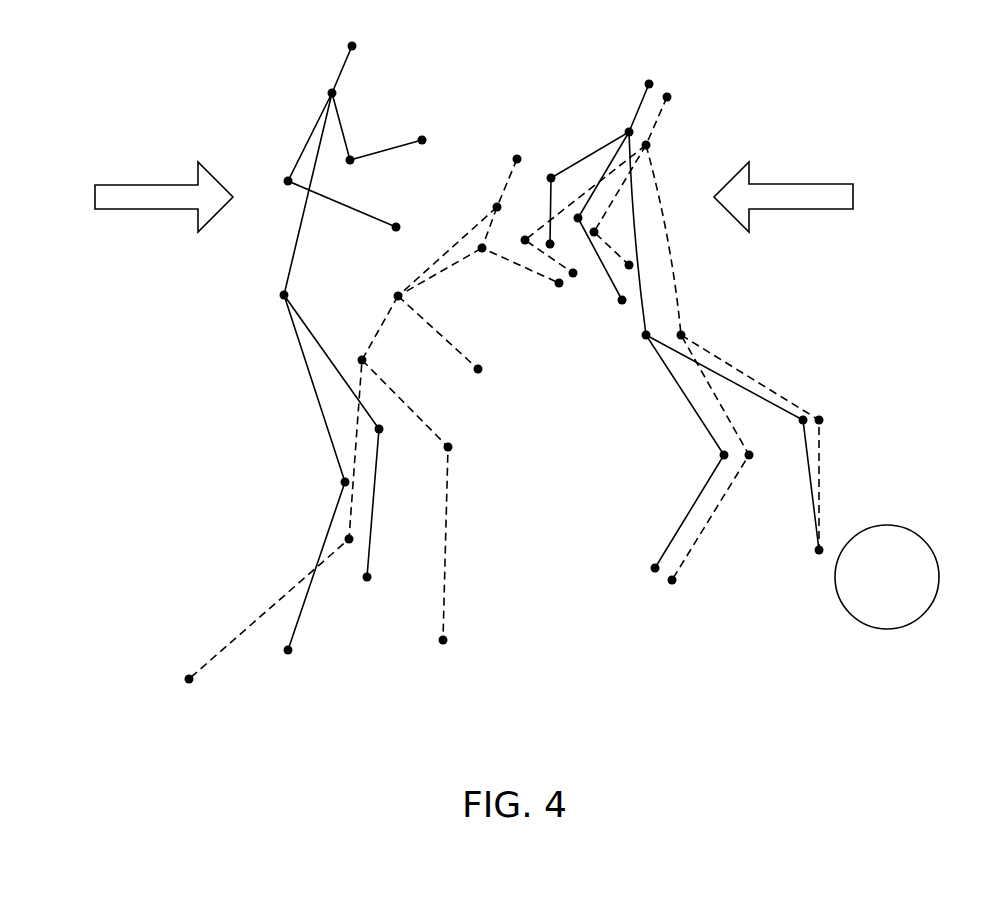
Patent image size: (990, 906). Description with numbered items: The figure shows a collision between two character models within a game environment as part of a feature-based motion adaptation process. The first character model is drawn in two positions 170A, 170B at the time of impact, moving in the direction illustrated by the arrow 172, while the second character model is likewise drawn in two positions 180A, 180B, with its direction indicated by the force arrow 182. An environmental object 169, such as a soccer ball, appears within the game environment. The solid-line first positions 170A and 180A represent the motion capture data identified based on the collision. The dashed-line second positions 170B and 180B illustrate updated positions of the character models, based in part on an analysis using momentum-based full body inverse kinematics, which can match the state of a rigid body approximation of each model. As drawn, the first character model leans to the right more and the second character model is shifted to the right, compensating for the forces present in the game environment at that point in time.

The environmental object 169 is at (892, 525).
The first position of first character model 170A is at (338, 73).
The second position of first character model 170B is at (496, 202).
The arrow 172 is at (102, 185).
The first position of second character model 180A is at (635, 122).
The second position of second character model 180B is at (669, 93).
The force arrow 182 is at (826, 184).